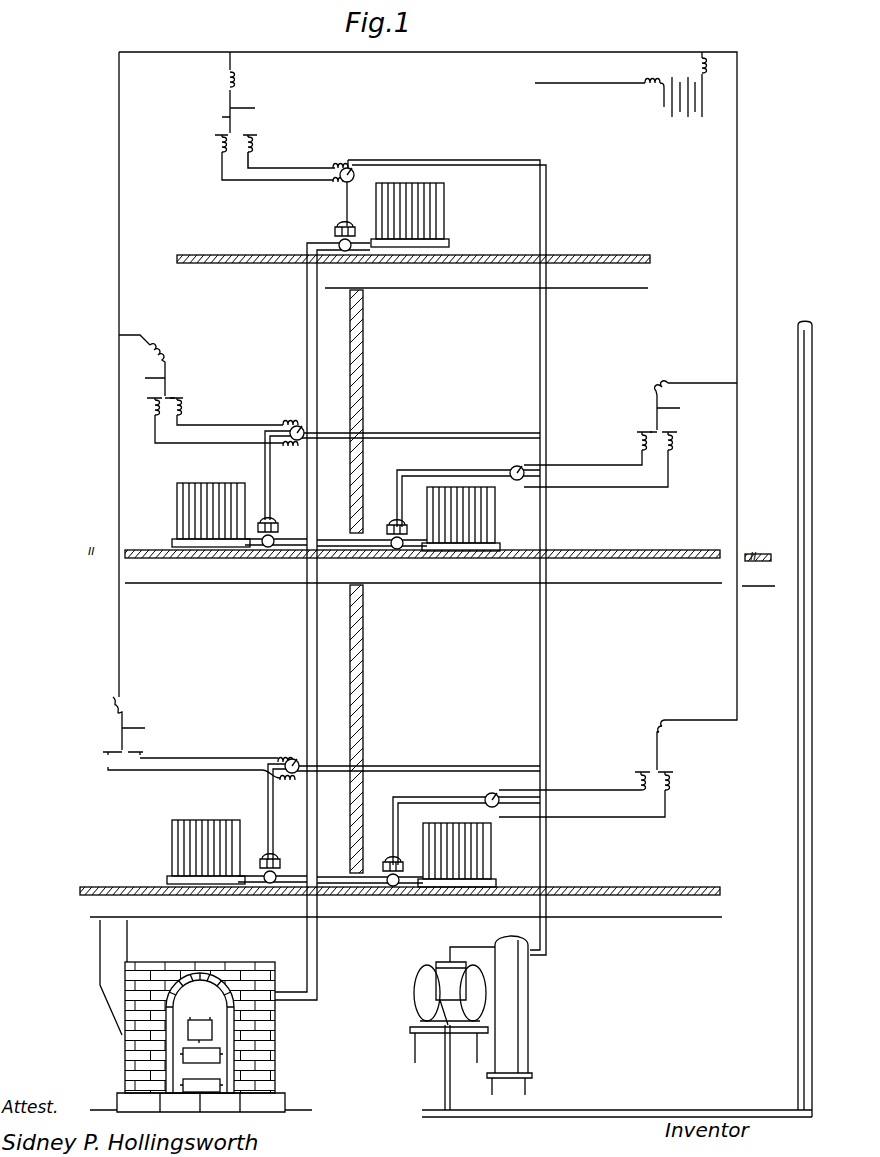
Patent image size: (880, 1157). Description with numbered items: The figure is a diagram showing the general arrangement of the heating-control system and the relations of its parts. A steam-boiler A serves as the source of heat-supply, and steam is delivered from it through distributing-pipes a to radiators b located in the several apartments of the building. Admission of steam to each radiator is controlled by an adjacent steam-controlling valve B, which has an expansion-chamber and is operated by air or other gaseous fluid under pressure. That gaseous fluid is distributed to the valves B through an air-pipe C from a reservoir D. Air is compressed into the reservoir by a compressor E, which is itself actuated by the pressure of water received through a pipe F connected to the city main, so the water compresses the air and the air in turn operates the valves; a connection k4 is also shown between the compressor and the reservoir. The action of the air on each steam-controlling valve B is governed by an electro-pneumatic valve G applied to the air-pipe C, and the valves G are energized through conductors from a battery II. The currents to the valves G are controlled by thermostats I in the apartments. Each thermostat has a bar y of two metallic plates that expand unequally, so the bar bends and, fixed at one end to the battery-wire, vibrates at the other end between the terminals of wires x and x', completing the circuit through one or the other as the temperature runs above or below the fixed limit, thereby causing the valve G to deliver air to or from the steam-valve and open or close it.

The distributing-pipes a is at (332, 616).
The radiators b is at (333, 535).
The air-pipe C is at (273, 831).
The steam-controlling valve B is at (338, 553).
The electro-pneumatic valve G is at (404, 487).
The thermostat I is at (401, 413).
The thermostatic bar y is at (379, 431).
The wire x is at (400, 477).
The wire x' is at (393, 463).
The battery II is at (621, 95).
The steam-boiler A is at (228, 993).
The reservoir D is at (545, 1015).
The compressor E is at (427, 1029).
The pipe F is at (617, 719).
The pipe from compressor to tank k4 is at (476, 943).